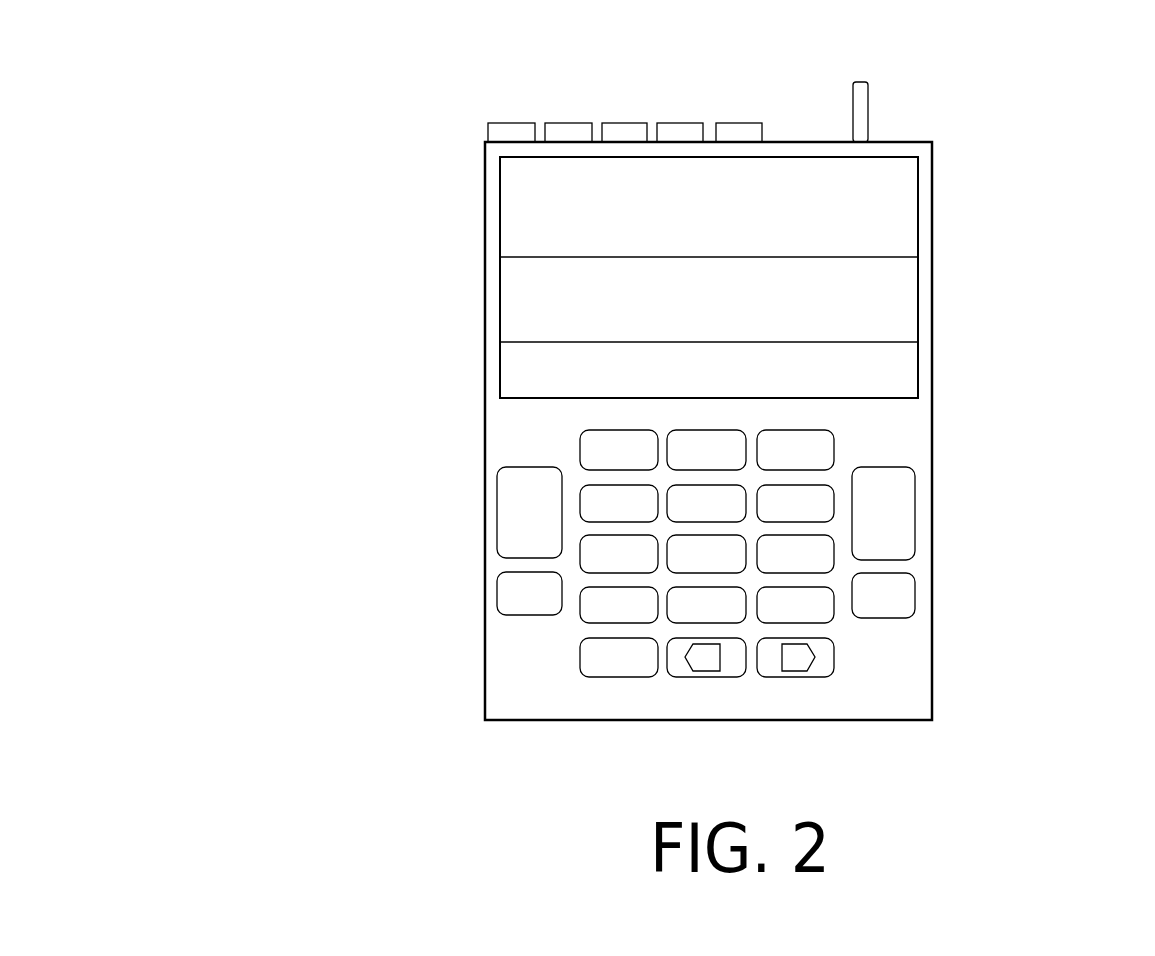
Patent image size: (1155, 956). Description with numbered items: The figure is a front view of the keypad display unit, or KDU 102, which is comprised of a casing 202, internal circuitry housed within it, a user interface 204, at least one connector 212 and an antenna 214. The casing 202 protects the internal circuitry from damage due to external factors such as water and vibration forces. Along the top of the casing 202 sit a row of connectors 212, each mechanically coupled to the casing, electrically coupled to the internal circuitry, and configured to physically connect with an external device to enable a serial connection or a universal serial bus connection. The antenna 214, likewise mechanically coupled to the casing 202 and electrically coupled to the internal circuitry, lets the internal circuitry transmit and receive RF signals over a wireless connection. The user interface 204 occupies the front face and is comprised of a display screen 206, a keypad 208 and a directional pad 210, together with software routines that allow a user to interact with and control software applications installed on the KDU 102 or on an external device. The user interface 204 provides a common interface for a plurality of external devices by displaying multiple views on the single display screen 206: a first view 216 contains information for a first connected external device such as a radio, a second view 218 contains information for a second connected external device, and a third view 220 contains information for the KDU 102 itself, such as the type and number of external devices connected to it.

The KDU 102 is at (353, 148).
The casing 202 is at (483, 290).
The user interface 204 is at (936, 332).
The display screen 206 is at (890, 156).
The keypad 208 is at (547, 445).
The directional pad 210 is at (851, 665).
The connector 212 is at (562, 108).
The antenna 214 is at (866, 78).
The first view 216 is at (689, 216).
The second view 218 is at (689, 317).
The third view 220 is at (865, 374).